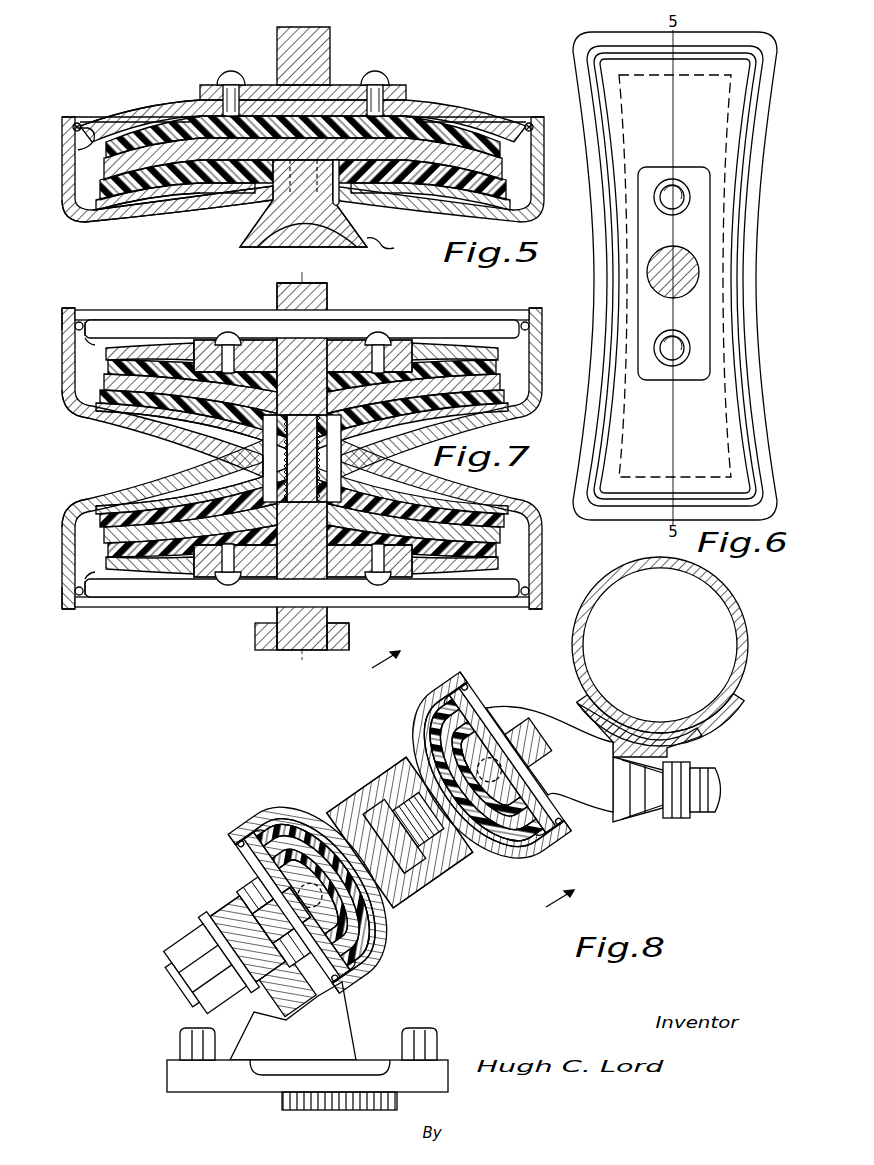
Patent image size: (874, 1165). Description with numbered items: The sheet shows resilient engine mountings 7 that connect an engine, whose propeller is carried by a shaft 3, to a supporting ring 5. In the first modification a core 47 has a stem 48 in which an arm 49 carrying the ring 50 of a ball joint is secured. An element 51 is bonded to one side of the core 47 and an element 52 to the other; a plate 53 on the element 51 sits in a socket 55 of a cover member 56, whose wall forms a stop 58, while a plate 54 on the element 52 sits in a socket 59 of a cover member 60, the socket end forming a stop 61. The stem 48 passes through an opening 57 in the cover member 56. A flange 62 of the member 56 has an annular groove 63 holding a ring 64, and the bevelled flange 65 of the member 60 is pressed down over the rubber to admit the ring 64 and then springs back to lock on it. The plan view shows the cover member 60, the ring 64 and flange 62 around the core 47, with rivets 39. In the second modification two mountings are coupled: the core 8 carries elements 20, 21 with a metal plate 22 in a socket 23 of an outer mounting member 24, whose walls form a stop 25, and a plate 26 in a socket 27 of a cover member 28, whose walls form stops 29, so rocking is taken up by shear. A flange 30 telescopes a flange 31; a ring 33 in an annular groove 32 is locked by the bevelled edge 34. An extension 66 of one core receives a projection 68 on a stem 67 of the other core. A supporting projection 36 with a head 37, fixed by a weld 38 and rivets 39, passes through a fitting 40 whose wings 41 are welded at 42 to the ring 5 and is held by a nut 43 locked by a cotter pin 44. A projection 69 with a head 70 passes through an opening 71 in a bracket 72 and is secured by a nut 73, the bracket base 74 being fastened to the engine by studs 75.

In FIG. 8, the shaft 3 is at (473, 779).
In FIG. 8, the supporting ring 5 is at (746, 640).
In FIG. 8, the mountings 7 is at (560, 736).
In FIG. 7, the core 8 is at (47, 556).
In FIG. 8, the core 8 is at (445, 725).
In FIG. 7, the element of resilient material 20 is at (108, 403).
In FIG. 8, the element of resilient material 20 is at (482, 872).
In FIG. 7, the element of resilient material 21 is at (522, 360).
In FIG. 8, the element of resilient material 21 is at (465, 700).
In FIG. 7, the metal plate 22 is at (115, 412).
In FIG. 8, the metal plate 22 is at (445, 862).
In FIG. 7, the socket 23 is at (145, 434).
In FIG. 8, the socket 23 is at (398, 762).
In FIG. 7, the outer mounting member 24 is at (72, 416).
In FIG. 8, the outer mounting member 24 is at (395, 728).
In FIG. 7, the stop 25 is at (78, 408).
In FIG. 7, the plate 26 is at (150, 366).
In FIG. 8, the plate 26 is at (482, 732).
In FIG. 7, the socket 27 is at (140, 352).
In FIG. 8, the socket 27 is at (507, 737).
In FIG. 7, the cover member 28 is at (122, 378).
In FIG. 8, the cover member 28 is at (530, 800).
In FIG. 7, the stops 29 is at (75, 340).
In FIG. 8, the stops 29 is at (553, 842).
In FIG. 7, the flange 30 is at (62, 312).
In FIG. 8, the flange 30 is at (462, 685).
In FIG. 7, the flange 31 is at (90, 330).
In FIG. 8, the flange 31 is at (560, 830).
In FIG. 7, the annular groove 32 is at (75, 324).
In FIG. 8, the annular groove 32 is at (464, 688).
In FIG. 7, the ring 33 is at (77, 322).
In FIG. 8, the ring 33 is at (466, 690).
In FIG. 7, the bevelled edge 34 is at (88, 330).
In FIG. 8, the bevelled edge 34 is at (556, 808).
In FIG. 7, the supporting projection 36 is at (277, 296).
In FIG. 8, the supporting projection 36 is at (560, 740).
In FIG. 7, the head 37 is at (350, 348).
In FIG. 8, the head 37 is at (500, 737).
In FIG. 7, the weld 38 is at (208, 346).
In FIG. 8, the weld 38 is at (518, 775).
In FIG. 7, the rivets 39 is at (229, 334).
In FIG. 6, the rivets 39 is at (654, 199).
In FIG. 8, the rivets 39 is at (510, 765).
In FIG. 8, the fitting 40 is at (638, 822).
In FIG. 8, the wings 41 is at (735, 718).
In FIG. 8, the weld 42 is at (745, 698).
In FIG. 8, the nut 43 is at (690, 816).
In FIG. 8, the cotter pin 44 is at (720, 785).
In FIG. 5, the core 47 is at (218, 170).
In FIG. 6, the core 47 is at (636, 488).
In FIG. 5, the stem 48 is at (288, 182).
In FIG. 5, the arm 49 is at (255, 240).
In FIG. 5, the ring 50 is at (389, 248).
In FIG. 5, the element 51 is at (133, 206).
In FIG. 5, the element 52 is at (154, 128).
In FIG. 5, the plate 53 is at (163, 186).
In FIG. 5, the plate 54 is at (196, 102).
In FIG. 5, the socket 55 is at (190, 192).
In FIG. 5, the cover member 56 is at (103, 214).
In FIG. 5, the opening 57 is at (340, 190).
In FIG. 5, the stop 58 is at (85, 222).
In FIG. 5, the socket 59 is at (130, 114).
In FIG. 5, the cover member 60 is at (100, 128).
In FIG. 6, the cover member 60 is at (607, 425).
In FIG. 5, the stop 61 is at (84, 142).
In FIG. 5, the flange 62 is at (68, 170).
In FIG. 6, the flange 62 is at (586, 452).
In FIG. 5, the annular groove 63 is at (72, 125).
In FIG. 5, the ring 64 is at (77, 124).
In FIG. 6, the ring 64 is at (603, 398).
In FIG. 5, the flange 65 is at (529, 122).
In FIG. 7, the extension 66 is at (330, 452).
In FIG. 8, the extension 66 is at (398, 805).
In FIG. 7, the stem 67 is at (262, 450).
In FIG. 8, the stem 67 is at (402, 866).
In FIG. 7, the projection 68 is at (262, 462).
In FIG. 8, the projection 68 is at (378, 805).
In FIG. 7, the projection 69 is at (350, 642).
In FIG. 8, the projection 69 is at (214, 940).
In FIG. 7, the head 70 is at (351, 624).
In FIG. 8, the head 70 is at (272, 897).
In FIG. 7, the opening 71 is at (258, 637).
In FIG. 8, the opening 71 is at (240, 912).
In FIG. 8, the bracket 72 is at (293, 1033).
In FIG. 8, the nut 73 is at (184, 955).
In FIG. 8, the base 74 is at (307, 1093).
In FIG. 8, the studs 75 is at (180, 1040).